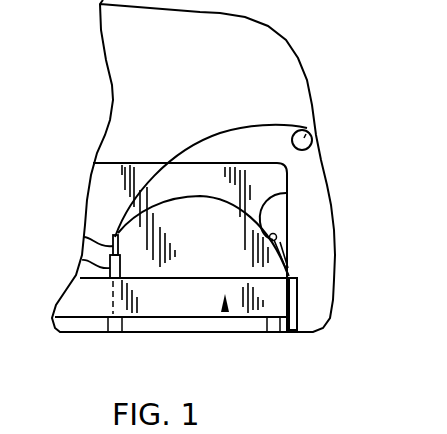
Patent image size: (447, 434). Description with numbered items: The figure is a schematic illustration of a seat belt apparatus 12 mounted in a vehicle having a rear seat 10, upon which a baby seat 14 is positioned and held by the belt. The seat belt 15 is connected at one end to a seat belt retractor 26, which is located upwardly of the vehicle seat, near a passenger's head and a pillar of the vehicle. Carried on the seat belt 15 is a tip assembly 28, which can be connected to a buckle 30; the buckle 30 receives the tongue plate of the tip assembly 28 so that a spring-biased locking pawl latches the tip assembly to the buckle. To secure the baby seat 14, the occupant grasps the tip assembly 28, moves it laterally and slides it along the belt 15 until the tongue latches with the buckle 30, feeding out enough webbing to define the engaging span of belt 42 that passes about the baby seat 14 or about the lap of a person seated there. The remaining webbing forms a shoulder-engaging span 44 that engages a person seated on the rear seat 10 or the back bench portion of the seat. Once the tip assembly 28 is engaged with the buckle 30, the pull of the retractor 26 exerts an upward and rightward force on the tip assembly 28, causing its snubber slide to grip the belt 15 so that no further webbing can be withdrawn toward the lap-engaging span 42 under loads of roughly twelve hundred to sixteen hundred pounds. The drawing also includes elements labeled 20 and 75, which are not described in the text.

The rear seat 10 is at (223, 314).
The seat belt apparatus 12 is at (348, 195).
The baby seat 14 is at (209, 241).
The seat belt 15 is at (267, 128).
The bracket 20 is at (300, 282).
The seat belt retractor 26 is at (313, 128).
The tip assembly 28 is at (84, 237).
The buckle 30 is at (82, 260).
The engaging span of belt 42 is at (287, 193).
The shoulder-engaging span 44 is at (148, 163).
The latch 75 is at (283, 235).